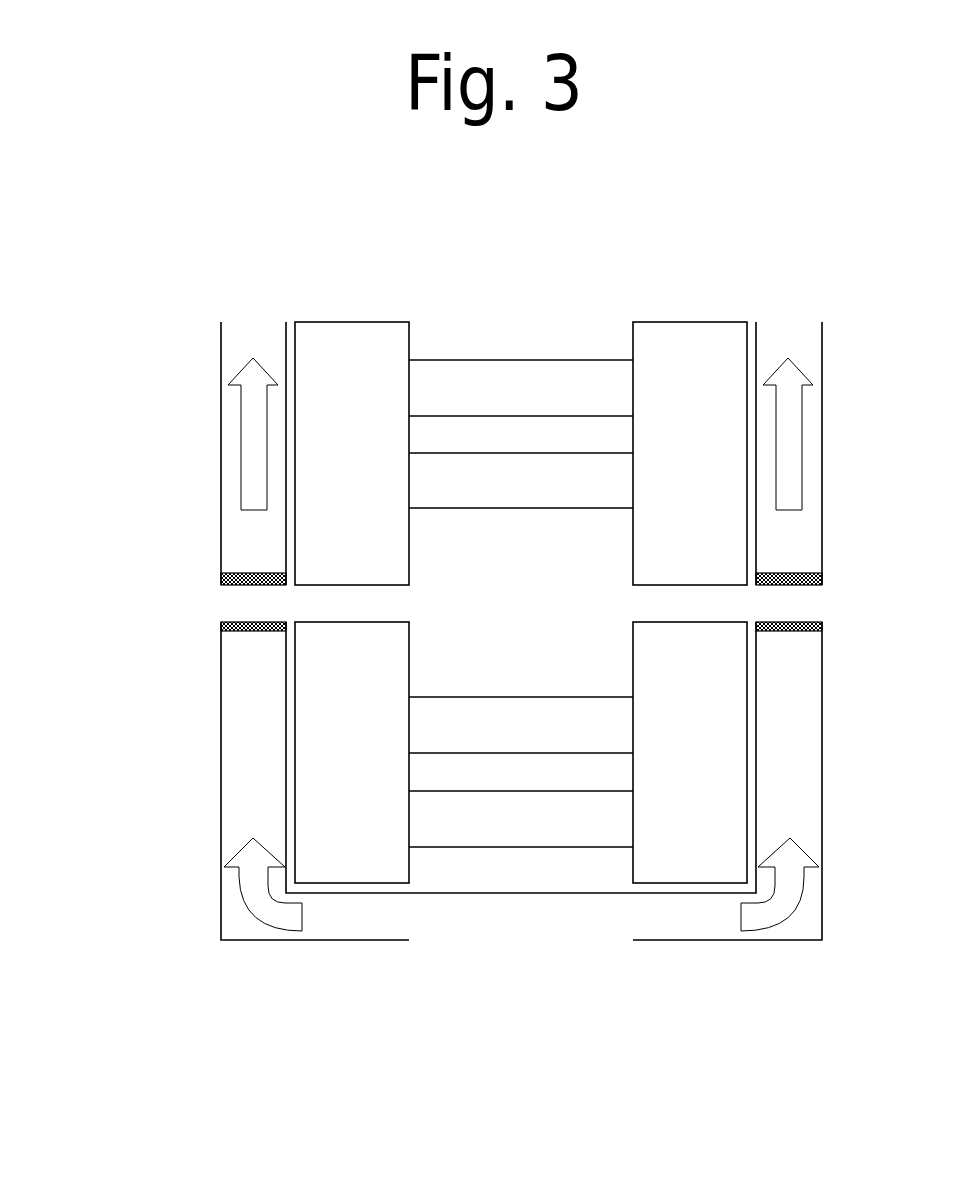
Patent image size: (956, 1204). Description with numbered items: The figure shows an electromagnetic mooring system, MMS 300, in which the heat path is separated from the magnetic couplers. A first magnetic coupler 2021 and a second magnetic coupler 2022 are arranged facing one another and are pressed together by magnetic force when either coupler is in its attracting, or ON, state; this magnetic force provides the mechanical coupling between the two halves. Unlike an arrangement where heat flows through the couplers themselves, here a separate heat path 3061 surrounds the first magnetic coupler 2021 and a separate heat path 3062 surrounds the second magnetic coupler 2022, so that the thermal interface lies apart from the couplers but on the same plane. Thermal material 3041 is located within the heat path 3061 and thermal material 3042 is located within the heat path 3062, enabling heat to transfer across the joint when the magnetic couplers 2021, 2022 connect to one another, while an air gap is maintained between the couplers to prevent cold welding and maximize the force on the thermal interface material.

The MMS 300 is at (202, 210).
The second magnetic coupler 2022 is at (185, 333).
The first magnetic coupler 2021 is at (182, 633).
The thermal material 3042 is at (220, 578).
The thermal material 3041 is at (220, 625).
The separate heat path 3062 is at (238, 405).
The separate heat path 3061 is at (253, 918).